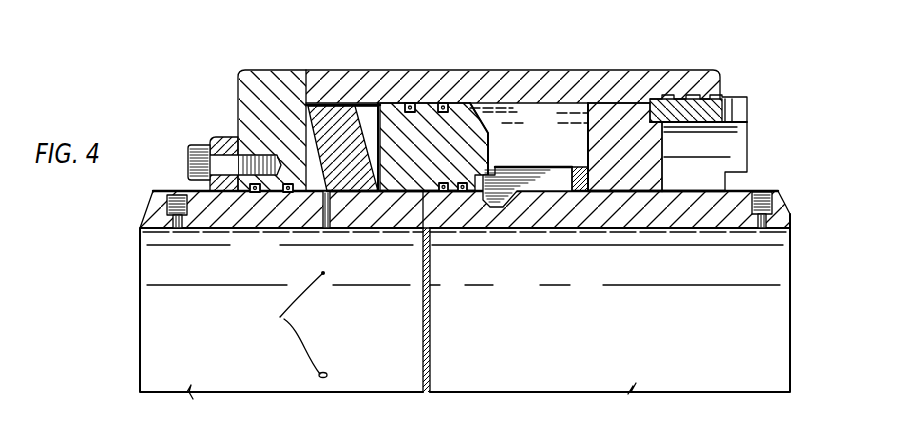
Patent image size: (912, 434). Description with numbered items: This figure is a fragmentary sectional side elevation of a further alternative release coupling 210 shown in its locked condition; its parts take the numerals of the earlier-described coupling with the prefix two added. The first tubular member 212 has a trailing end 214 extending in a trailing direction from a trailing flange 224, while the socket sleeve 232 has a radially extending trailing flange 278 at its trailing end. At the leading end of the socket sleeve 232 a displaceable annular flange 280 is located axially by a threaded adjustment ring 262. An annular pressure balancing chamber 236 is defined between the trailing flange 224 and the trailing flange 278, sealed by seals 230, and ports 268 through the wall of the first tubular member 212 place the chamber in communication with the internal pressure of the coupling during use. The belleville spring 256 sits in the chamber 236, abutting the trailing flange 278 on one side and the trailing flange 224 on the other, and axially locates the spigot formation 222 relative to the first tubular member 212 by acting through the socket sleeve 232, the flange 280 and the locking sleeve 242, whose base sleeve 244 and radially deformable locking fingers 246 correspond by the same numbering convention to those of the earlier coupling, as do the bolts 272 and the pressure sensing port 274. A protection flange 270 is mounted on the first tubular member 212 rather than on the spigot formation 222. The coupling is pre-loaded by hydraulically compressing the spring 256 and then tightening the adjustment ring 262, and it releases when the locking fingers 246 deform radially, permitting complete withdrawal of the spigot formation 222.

The release coupling 210 is at (770, 79).
The first tubular member 212 is at (129, 308).
The trailing end 214 is at (140, 228).
The spigot formation 222 is at (801, 298).
The trailing flange 224 is at (453, 137).
The seals 230 is at (443, 103).
The socket sleeve 232 is at (587, 75).
The annular pressure balancing chamber 236 is at (371, 117).
The locking sleeve 242 is at (541, 158).
The seal ring 244 is at (580, 192).
The piston ring 246 is at (527, 184).
The belleville spring 256 is at (333, 118).
The threaded adjustment ring 262 is at (757, 108).
The ports 268 is at (331, 224).
The protection flange 270 is at (210, 135).
The adjusting screw 272 is at (188, 163).
The bolt 274 is at (765, 191).
The trailing flange 278 is at (248, 123).
The displaceable annular flange 280 is at (620, 113).